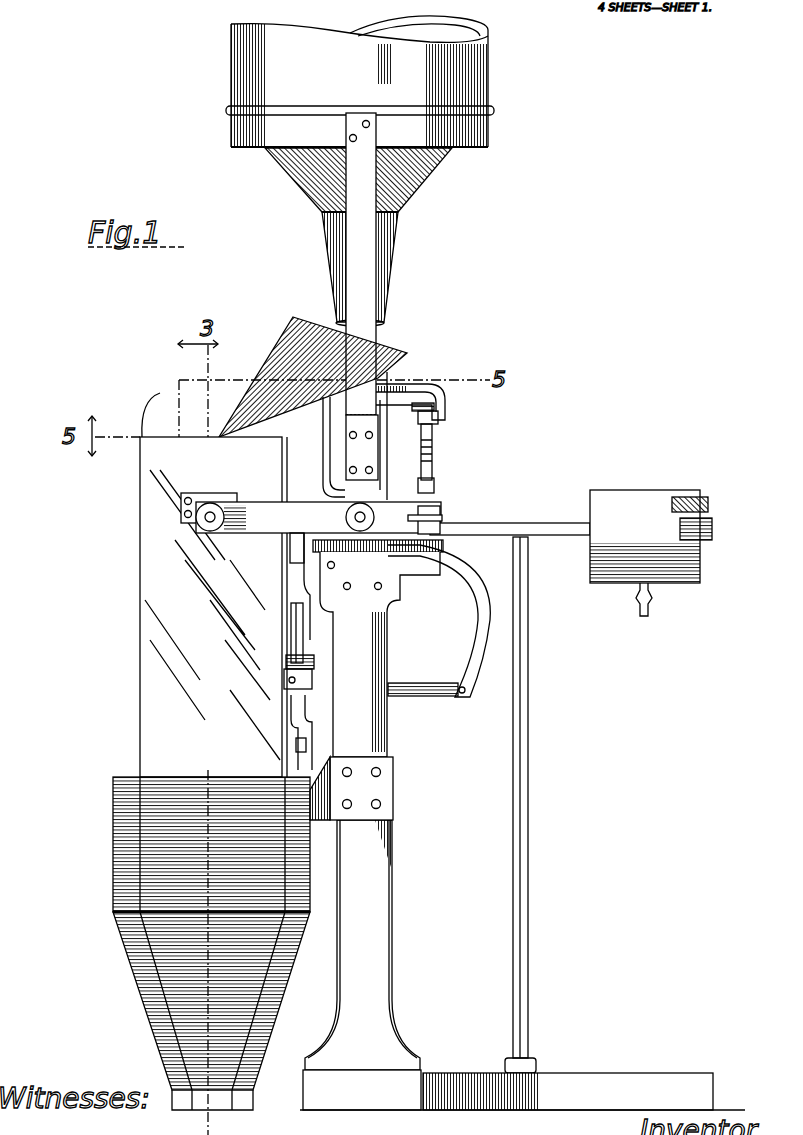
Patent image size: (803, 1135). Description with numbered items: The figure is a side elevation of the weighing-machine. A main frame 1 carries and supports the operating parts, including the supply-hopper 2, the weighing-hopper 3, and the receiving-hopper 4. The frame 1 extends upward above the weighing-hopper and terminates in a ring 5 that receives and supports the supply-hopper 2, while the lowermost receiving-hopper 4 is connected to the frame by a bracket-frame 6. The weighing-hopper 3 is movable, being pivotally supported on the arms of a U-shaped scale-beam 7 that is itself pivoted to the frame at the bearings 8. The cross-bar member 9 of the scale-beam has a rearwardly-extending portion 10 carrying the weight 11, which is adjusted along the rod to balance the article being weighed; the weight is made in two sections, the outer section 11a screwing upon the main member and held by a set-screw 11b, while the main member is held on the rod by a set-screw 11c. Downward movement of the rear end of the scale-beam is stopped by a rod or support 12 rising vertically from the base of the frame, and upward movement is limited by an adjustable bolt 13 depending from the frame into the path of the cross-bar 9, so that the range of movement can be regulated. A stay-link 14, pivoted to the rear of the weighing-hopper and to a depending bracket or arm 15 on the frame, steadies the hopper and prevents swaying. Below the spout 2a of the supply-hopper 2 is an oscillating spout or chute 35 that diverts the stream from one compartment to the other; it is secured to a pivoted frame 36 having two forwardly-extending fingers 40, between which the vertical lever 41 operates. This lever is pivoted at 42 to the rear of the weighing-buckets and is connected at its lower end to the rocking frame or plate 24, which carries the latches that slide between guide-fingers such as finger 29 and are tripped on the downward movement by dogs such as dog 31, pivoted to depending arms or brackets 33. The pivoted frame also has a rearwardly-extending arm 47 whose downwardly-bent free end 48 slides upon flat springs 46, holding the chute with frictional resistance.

The main frame 1 is at (386, 893).
The supply-hopper 2 is at (359, 171).
The spout of the supply-hopper 2a is at (398, 248).
The weighing-hopper 3 is at (197, 716).
The receiving-hopper 4 is at (211, 943).
The ring 5 is at (228, 132).
The bracket-frame 6 is at (351, 792).
The scale-beam 7 is at (311, 513).
The bearings 8 is at (355, 518).
The cross-bar member 9 is at (434, 508).
The rearwardly-extending portion 10 is at (476, 524).
The weight 11 is at (642, 503).
The outer section of the weight 11a is at (708, 500).
The set-screw 11b is at (712, 530).
The set-screw 11c is at (650, 606).
The rod or support 12 is at (535, 812).
The adjustable bolt 13 is at (432, 478).
The stay-link 14 is at (434, 700).
The depending bracket or arm 15 is at (462, 643).
The frame or plate 24 is at (291, 727).
The guide-finger 29 is at (290, 610).
The dog 31 is at (285, 661).
The depending arm or bracket 33 is at (305, 648).
The spout or chute 35 is at (313, 377).
The pivoted frame 36 is at (330, 455).
The forwardly-extending fingers 40 is at (312, 462).
The vertical lever 41 is at (302, 585).
The pivot 42 is at (290, 551).
The flat springs 46 is at (438, 425).
The rearwardly-extending arm 47 is at (411, 383).
The free end of the arm 48 is at (445, 411).